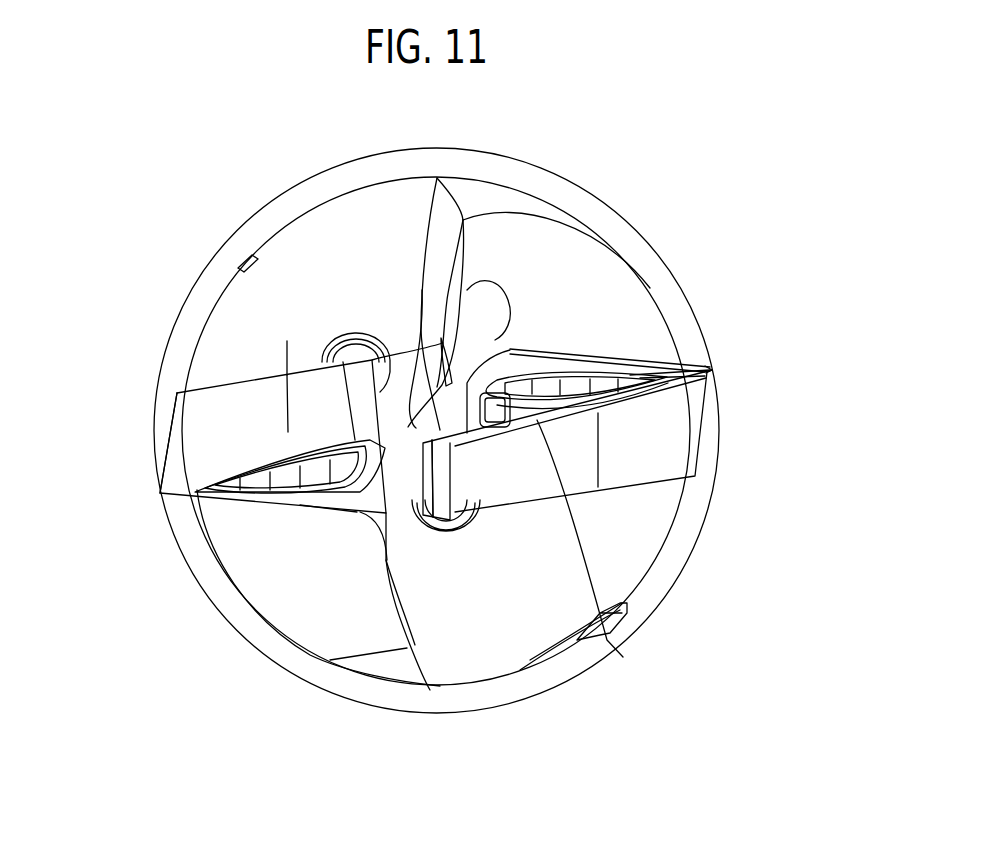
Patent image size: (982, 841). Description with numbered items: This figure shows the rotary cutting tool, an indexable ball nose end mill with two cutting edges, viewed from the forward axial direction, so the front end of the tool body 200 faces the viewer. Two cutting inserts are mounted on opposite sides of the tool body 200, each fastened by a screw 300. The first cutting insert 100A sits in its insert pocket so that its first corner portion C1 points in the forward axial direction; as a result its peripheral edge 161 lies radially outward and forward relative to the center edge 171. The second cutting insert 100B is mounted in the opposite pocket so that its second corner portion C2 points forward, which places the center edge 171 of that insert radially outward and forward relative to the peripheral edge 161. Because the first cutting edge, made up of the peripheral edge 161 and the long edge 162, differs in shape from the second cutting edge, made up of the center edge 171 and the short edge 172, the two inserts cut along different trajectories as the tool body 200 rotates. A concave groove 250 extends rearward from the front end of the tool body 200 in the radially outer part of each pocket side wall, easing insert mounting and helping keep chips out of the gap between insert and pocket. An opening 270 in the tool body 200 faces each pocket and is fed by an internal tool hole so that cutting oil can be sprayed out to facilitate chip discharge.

The tool body 200 is at (553, 160).
The concave groove 250 is at (356, 345).
The opening 270 is at (487, 325).
The screw 300 is at (577, 387).
The first cutting insert 100A is at (701, 428).
The second cutting insert 100B is at (195, 415).
The peripheral edge 161 is at (585, 612).
The long edge 162 is at (712, 368).
The center edge 171 is at (357, 512).
The short edge 172 is at (160, 492).
The first corner portion C1 is at (455, 458).
The second corner portion C2 is at (372, 422).